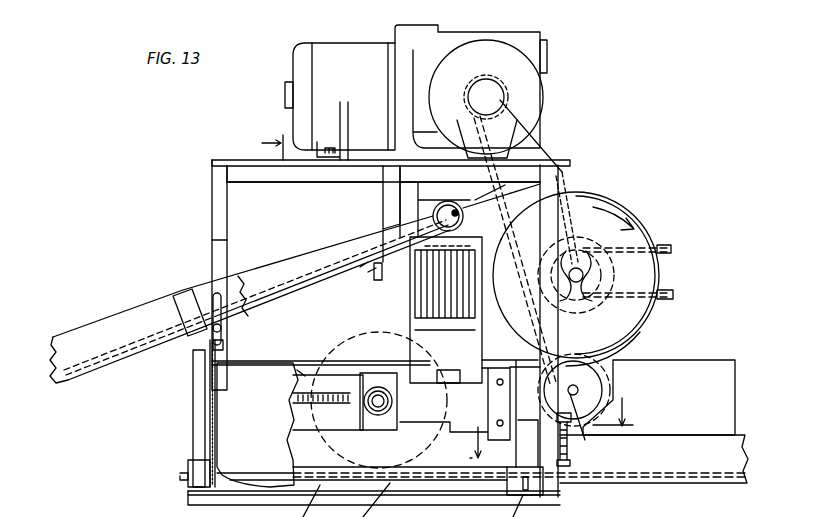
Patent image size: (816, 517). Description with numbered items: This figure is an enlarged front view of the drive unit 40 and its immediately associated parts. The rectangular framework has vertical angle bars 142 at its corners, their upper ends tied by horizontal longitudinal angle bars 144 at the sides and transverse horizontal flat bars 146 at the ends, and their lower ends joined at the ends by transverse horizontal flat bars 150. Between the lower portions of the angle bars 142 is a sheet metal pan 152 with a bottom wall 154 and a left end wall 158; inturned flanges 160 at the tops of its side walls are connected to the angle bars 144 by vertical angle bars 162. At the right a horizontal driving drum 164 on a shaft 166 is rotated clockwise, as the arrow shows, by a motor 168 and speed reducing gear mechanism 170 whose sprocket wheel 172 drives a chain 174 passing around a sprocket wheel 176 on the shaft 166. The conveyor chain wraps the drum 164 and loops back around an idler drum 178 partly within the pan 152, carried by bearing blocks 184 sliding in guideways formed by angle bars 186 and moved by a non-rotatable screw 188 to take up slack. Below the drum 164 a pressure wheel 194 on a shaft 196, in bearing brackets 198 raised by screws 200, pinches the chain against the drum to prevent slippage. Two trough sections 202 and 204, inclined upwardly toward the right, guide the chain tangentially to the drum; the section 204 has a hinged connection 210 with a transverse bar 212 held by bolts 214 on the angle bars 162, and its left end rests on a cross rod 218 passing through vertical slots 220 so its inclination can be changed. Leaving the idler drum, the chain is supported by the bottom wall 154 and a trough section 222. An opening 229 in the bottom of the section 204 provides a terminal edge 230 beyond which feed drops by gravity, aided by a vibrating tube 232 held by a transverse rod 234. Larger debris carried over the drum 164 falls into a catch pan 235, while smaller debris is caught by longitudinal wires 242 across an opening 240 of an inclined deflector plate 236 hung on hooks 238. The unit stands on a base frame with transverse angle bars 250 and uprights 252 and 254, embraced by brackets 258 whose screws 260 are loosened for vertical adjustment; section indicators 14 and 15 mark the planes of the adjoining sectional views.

The drive unit 40 is at (210, 247).
The vertical angle bars 142 is at (210, 206).
The horizontal longitudinal angle bars 144 is at (326, 182).
The transverse horizontal flat bars 146 is at (212, 170).
The transverse horizontal flat bars 150 is at (210, 463).
The sheet metal pan 152 is at (258, 356).
The bottom wall 154 is at (240, 472).
The end wall 158 is at (216, 393).
The inturned flanges 160 is at (273, 370).
The vertical angle bars 162 is at (383, 216).
The horizontal driving drum 164 is at (640, 240).
The horizontal shaft 166 is at (584, 276).
The motor 168 is at (342, 50).
The speed reducing gear mechanism 170 is at (530, 40).
The sprocket wheel 172 is at (500, 78).
The chain 174 is at (541, 152).
The sprocket wheel 176 is at (577, 312).
The horizontal idler drum 178 is at (343, 353).
The bearing blocks 184 is at (372, 430).
The angle bars 186 is at (298, 370).
The horizontal non-rotatable screw 188 is at (317, 400).
The pressure wheel 194 is at (597, 378).
The shaft 196 is at (600, 360).
The bearing brackets 198 is at (578, 422).
The screws 200 is at (569, 446).
The trough section 202 is at (80, 330).
The trough section 204 is at (308, 258).
The hinged connection 210 is at (365, 268).
The transverse bar 212 is at (377, 280).
The bolts 214 is at (373, 275).
The cross rod 218 is at (223, 330).
The vertical slots 220 is at (238, 278).
The trough section 222 is at (668, 468).
The opening 229 is at (453, 247).
The terminal edge 230 is at (425, 246).
The horizontal tube 232 is at (470, 201).
The transverse rod 234 is at (452, 206).
The catch pan 235 is at (690, 360).
The inclined plate 236 is at (483, 292).
The hooks 238 is at (426, 160).
The opening 240 is at (470, 322).
The longitudinal wires 242 is at (456, 283).
The transverse angle bars 250 is at (188, 494).
The uprights 252 is at (482, 372).
The uprights 254 is at (194, 378).
The brackets 258 is at (190, 466).
The screws 260 is at (182, 475).
The section line 14 is at (260, 147).
The section line 15 is at (553, 426).